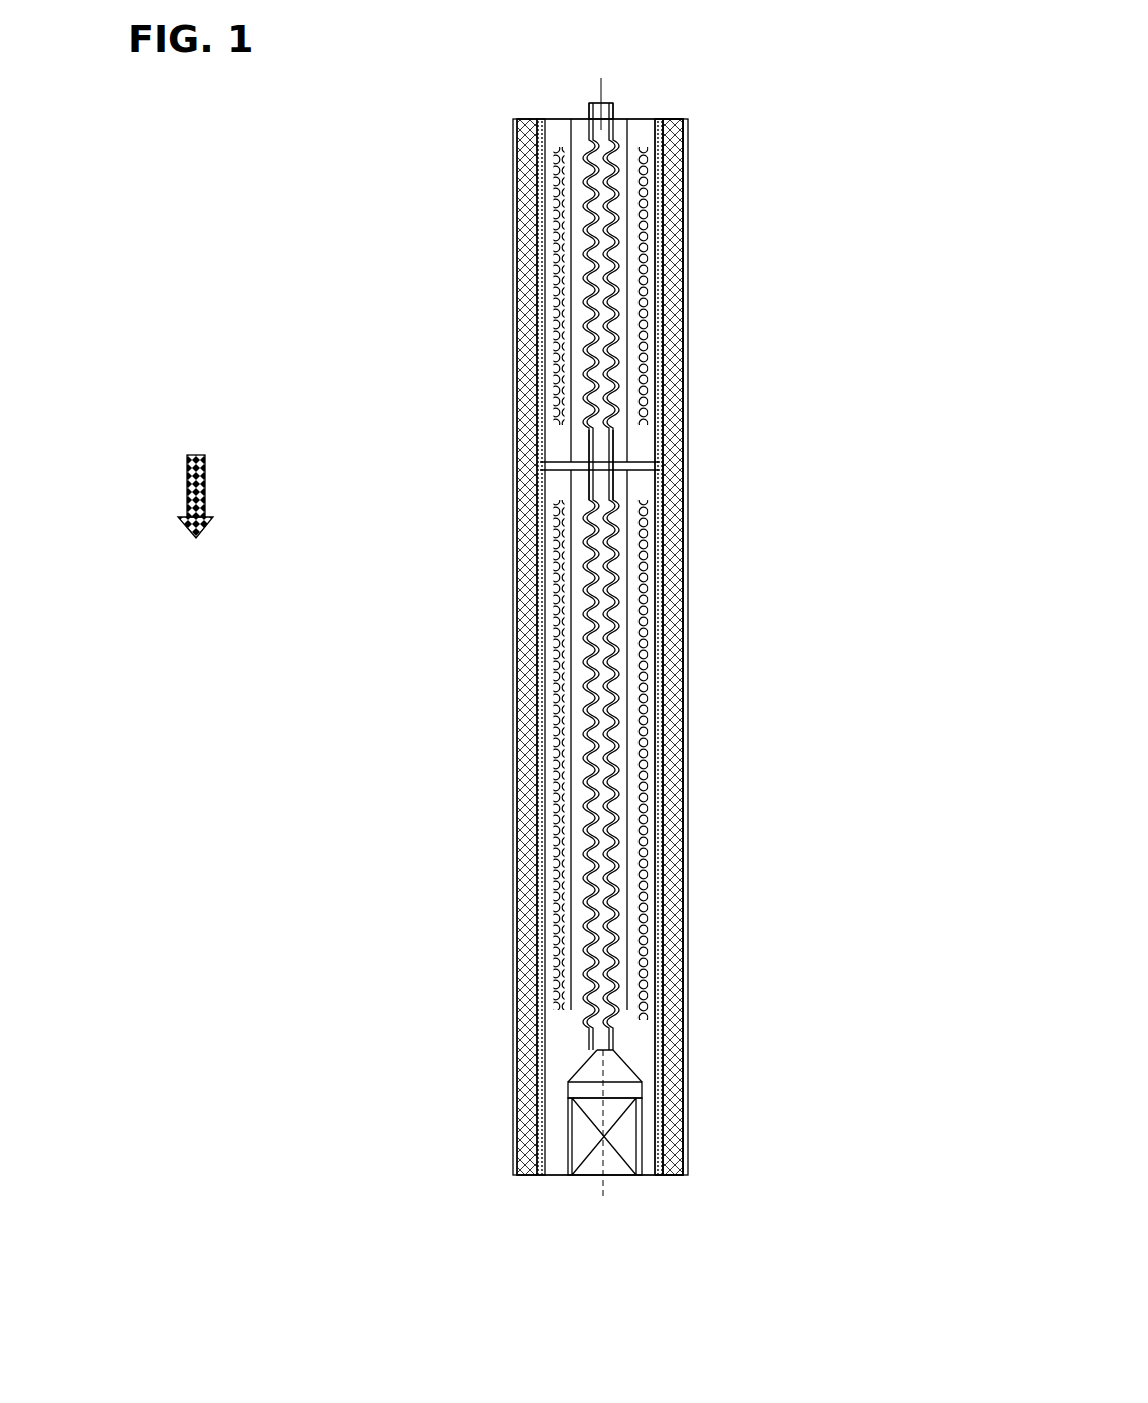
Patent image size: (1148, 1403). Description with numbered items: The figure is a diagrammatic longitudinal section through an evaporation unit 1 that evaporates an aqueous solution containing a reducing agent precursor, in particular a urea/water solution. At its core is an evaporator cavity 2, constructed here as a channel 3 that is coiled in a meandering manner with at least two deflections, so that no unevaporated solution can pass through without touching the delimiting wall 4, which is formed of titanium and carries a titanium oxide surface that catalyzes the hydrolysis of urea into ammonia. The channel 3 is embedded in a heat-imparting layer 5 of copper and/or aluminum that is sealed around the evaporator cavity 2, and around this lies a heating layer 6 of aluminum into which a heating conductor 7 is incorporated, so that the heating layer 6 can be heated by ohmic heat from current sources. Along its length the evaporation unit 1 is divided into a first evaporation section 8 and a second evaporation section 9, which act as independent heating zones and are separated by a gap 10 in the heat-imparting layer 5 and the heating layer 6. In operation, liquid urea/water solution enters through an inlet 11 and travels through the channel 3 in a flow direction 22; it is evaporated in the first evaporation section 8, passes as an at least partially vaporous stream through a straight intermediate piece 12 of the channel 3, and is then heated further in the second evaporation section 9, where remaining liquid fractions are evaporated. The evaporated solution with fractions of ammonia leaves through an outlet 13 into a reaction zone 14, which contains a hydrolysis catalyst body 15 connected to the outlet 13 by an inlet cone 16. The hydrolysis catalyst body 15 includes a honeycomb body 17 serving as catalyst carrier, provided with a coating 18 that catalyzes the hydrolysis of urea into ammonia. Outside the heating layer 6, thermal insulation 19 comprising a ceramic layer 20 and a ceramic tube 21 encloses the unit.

The evaporation unit 1 is at (702, 109).
The evaporator chamber or cavity 2 is at (610, 762).
The channel 3 is at (690, 193).
The wall 4 is at (592, 190).
The heat-imparting layer 5 is at (583, 290).
The heating layer 6 is at (641, 135).
The heating conductor 7 is at (643, 385).
The first evaporation section 8 is at (342, 114).
The second evaporation section 9 is at (342, 478).
The gap 10 is at (567, 466).
The inlet 11 is at (590, 112).
The straight intermediate piece 12 is at (597, 480).
The outlet 13 is at (595, 1048).
The reaction zone 14 is at (342, 1060).
The hydrolysis catalyst body 15 is at (605, 1136).
The inlet cone 16 is at (590, 1067).
The honeycomb body 17 is at (623, 1140).
The coating 18 is at (623, 1155).
The thermal insulation 19 is at (827, 293).
The ceramic layer 20 is at (675, 308).
The ceramic tube 21 is at (660, 355).
The flow direction 22 is at (190, 455).